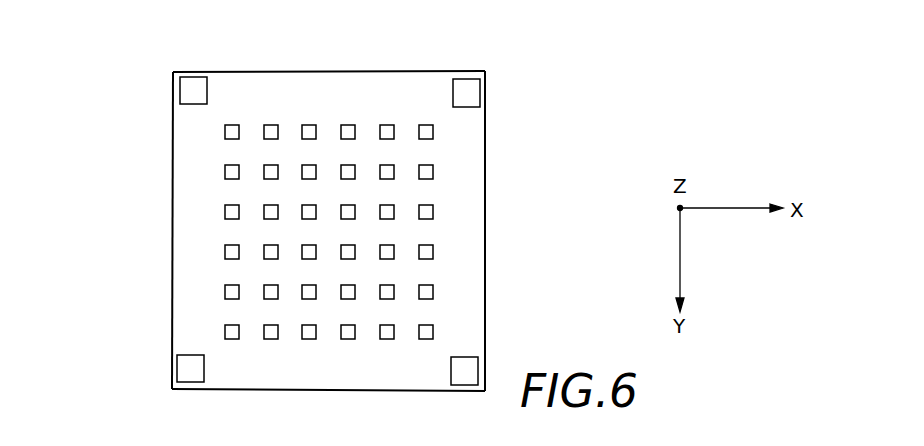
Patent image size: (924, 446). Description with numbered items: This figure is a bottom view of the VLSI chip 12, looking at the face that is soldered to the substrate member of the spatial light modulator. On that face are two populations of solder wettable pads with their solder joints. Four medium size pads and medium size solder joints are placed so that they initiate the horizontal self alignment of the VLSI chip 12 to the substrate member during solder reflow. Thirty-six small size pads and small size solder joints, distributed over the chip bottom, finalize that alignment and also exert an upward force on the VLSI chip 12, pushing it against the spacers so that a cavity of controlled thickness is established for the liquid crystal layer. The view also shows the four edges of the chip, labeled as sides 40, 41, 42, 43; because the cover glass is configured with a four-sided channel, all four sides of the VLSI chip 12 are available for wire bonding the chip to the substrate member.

The VLSI chip 12 is at (328, 227).
The right edge 40 is at (484, 248).
The side of VLSI chip 41 is at (356, 391).
The side of VLSI chip 42 is at (173, 230).
The side of VLSI chip 43 is at (368, 72).